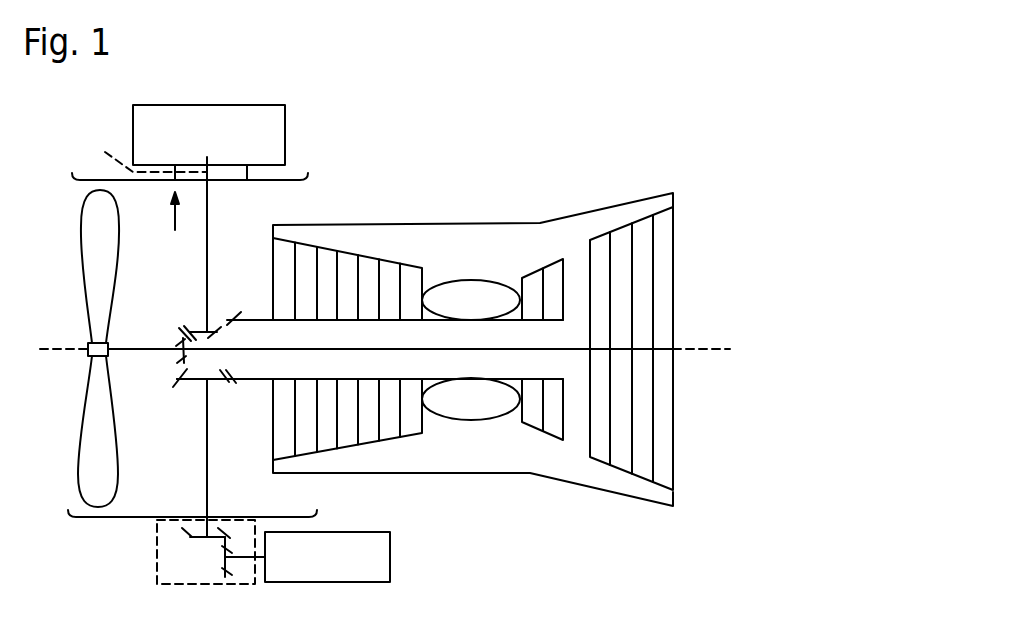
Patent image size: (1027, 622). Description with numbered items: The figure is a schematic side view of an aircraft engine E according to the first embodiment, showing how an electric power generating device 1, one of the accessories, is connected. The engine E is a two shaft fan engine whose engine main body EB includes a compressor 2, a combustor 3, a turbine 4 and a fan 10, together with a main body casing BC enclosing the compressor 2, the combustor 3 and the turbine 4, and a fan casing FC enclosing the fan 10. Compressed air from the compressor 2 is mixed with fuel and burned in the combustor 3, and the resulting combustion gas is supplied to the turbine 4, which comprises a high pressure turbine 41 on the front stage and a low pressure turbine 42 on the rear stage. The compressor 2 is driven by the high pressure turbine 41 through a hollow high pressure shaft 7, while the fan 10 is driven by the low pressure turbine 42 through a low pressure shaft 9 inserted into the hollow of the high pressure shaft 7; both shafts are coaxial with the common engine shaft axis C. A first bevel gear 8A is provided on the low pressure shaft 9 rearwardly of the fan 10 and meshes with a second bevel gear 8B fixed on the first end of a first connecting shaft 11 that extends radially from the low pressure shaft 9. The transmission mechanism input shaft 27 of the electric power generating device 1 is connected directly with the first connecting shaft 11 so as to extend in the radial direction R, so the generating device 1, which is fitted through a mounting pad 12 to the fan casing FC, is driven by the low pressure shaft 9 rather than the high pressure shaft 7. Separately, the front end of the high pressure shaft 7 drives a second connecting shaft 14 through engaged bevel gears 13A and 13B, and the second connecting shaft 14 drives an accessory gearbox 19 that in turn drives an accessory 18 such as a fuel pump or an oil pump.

The electric power generating device 1 is at (283, 111).
The compressor 2 is at (347, 255).
The combustor 3 is at (470, 285).
The turbine 4 is at (642, 148).
The high pressure turbine 41 is at (553, 270).
The low pressure turbine 42 is at (633, 226).
The high pressure shaft 7 is at (510, 382).
The first bevel gear 8A is at (187, 343).
The second bevel gear 8B is at (193, 327).
The low pressure shaft 9 is at (571, 352).
The fan 10 is at (82, 252).
The first connecting shaft 11 is at (204, 245).
The mounting pad 12 is at (230, 173).
The bevel gear 13A is at (232, 318).
The bevel gear 13B is at (190, 381).
The second connecting shaft 14 is at (208, 478).
The accessory 18 is at (390, 546).
The accessory gearbox 19 is at (155, 552).
The transmission mechanism input shaft 27 is at (139, 154).
The fan casing FC is at (294, 178).
The main body casing BC is at (430, 223).
The aircraft engine E is at (488, 166).
The engine main body EB is at (477, 484).
The engine shaft axis C is at (703, 347).
The radial direction R is at (172, 212).